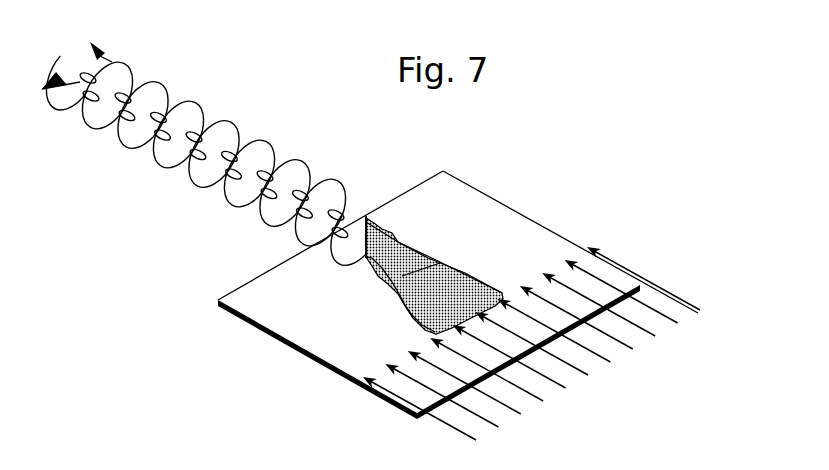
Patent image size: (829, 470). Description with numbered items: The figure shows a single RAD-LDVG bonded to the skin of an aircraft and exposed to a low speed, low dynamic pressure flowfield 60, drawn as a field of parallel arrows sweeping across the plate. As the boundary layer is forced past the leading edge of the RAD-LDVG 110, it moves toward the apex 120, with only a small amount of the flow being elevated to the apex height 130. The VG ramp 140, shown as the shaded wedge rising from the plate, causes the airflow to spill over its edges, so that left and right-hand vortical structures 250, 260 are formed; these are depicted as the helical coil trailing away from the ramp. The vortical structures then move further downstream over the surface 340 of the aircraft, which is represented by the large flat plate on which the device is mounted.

The low dynamic pressure flowfield 60 is at (531, 343).
The leading edge of the RAD-LDVG 110 is at (393, 352).
The apex 120 is at (392, 225).
The apex height 130 is at (366, 243).
The VG ramp 140 is at (363, 295).
The left-hand vortical structure 250 is at (77, 96).
The right-hand vortical structure 260 is at (218, 164).
The surface 340 is at (458, 235).